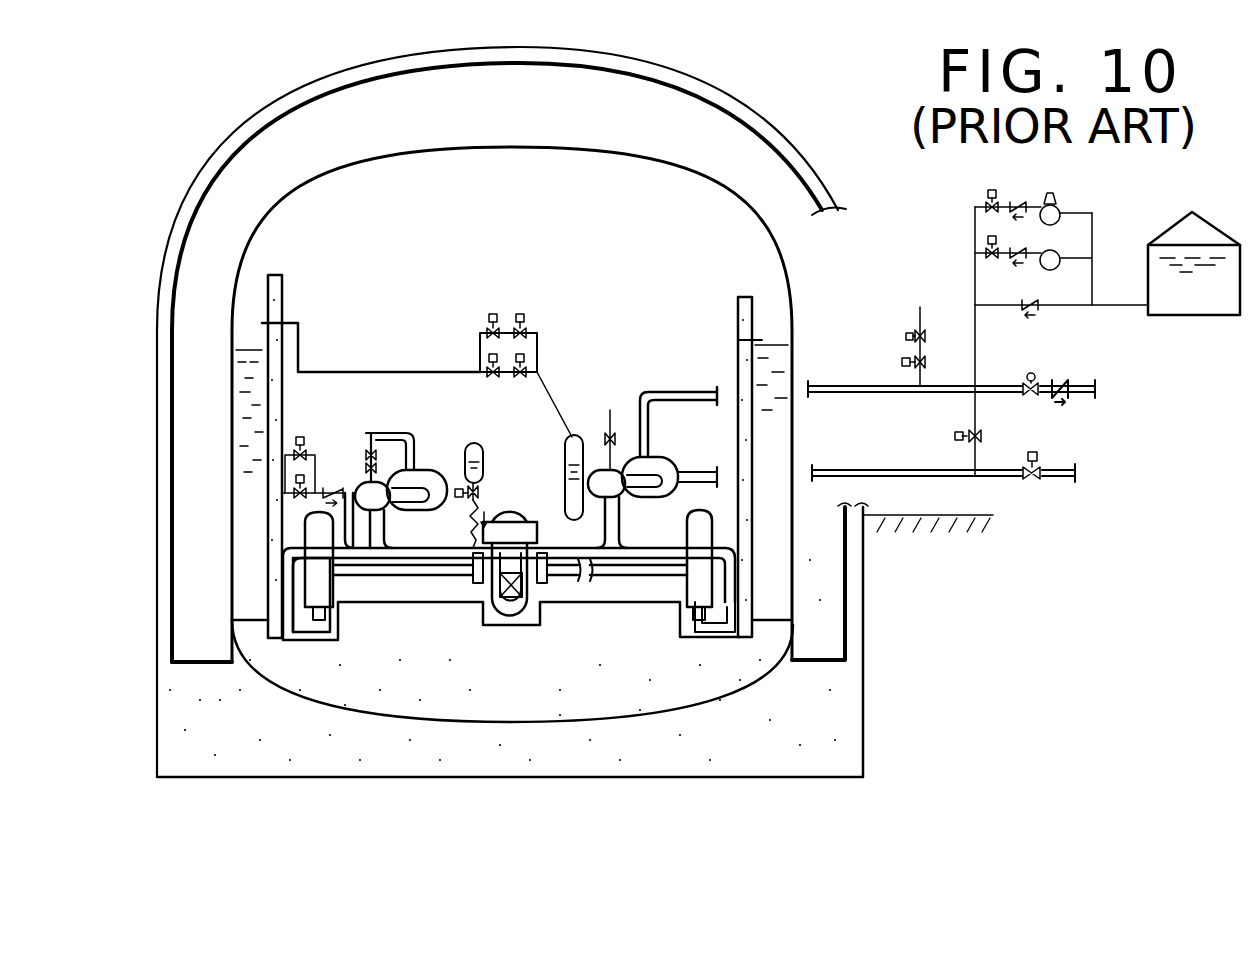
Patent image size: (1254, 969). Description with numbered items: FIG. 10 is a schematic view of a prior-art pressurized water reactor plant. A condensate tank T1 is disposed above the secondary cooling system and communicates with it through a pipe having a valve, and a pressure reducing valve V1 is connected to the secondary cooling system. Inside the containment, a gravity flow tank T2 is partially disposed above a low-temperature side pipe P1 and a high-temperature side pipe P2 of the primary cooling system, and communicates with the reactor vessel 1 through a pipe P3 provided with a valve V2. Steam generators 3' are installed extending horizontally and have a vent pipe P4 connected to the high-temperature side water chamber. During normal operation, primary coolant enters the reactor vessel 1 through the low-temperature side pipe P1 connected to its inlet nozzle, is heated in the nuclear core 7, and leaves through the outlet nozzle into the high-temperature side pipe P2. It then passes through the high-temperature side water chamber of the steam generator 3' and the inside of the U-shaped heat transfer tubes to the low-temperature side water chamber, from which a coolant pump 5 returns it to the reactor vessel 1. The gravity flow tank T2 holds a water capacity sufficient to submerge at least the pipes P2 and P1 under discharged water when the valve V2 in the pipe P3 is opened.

The reactor vessel 1 is at (535, 585).
The nuclear core 7 is at (511, 598).
The coolant pump 5 is at (333, 585).
The steam generator 3' is at (541, 479).
The low-temperature side pipe P1 is at (625, 577).
The high-temperature side pipe P2 is at (588, 540).
The pipe P3 is at (347, 508).
The vent pipe P4 is at (608, 457).
The pressure reducing valve V1 is at (907, 358).
The valve V2 is at (299, 445).
The condensate tank T1 is at (1190, 305).
The gravity flow tank T2 is at (243, 482).